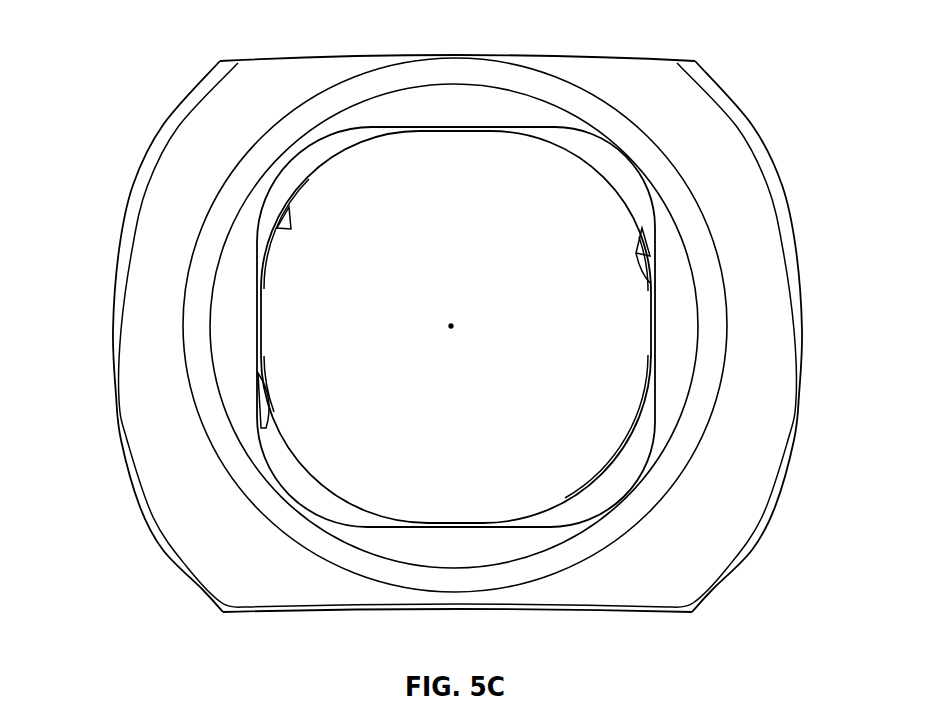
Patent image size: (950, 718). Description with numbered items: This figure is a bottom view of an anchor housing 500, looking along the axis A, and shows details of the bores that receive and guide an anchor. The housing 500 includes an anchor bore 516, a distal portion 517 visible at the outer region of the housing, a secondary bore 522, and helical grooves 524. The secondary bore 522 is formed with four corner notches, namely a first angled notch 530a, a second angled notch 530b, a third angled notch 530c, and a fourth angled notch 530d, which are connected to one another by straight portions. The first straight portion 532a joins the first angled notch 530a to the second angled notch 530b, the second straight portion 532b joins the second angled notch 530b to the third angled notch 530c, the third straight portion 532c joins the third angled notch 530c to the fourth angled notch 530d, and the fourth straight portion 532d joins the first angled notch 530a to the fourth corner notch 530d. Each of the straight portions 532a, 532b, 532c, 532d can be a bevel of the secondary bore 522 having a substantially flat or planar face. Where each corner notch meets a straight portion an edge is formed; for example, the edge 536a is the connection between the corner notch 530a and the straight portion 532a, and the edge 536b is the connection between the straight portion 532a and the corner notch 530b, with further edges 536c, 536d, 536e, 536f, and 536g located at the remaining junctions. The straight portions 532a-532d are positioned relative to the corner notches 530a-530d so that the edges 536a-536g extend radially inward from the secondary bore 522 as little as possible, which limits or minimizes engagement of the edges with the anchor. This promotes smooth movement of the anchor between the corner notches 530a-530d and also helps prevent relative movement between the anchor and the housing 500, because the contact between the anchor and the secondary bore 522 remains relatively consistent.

The anchor housing 500 is at (146, 62).
The anchor bore 516 is at (296, 218).
The distal portion 517 is at (803, 498).
The secondary bore 522 is at (232, 333).
The helical grooves 524 is at (647, 257).
The first angled notch 530a is at (303, 160).
The second angled notch 530b is at (605, 170).
The third angled notch 530c is at (605, 490).
The fourth angled notch 530d is at (303, 490).
The first straight portion 532a is at (483, 128).
The second straight portion 532b is at (650, 378).
The third straight portion 532c is at (410, 522).
The fourth straight portion 532d is at (257, 277).
The edge 536a is at (380, 128).
The edge 536b is at (513, 138).
The edge 536c is at (653, 267).
The edge 536d is at (513, 522).
The edge 536e is at (393, 523).
The edge 536f is at (270, 408).
The edge 536g is at (257, 262).
The axis A is at (451, 326).